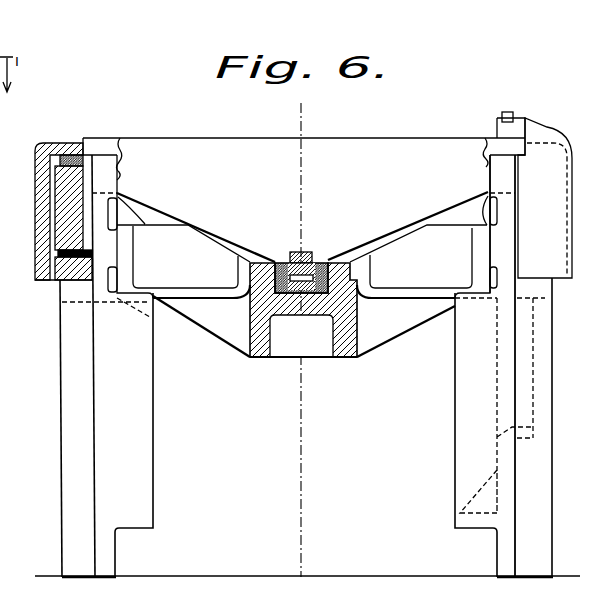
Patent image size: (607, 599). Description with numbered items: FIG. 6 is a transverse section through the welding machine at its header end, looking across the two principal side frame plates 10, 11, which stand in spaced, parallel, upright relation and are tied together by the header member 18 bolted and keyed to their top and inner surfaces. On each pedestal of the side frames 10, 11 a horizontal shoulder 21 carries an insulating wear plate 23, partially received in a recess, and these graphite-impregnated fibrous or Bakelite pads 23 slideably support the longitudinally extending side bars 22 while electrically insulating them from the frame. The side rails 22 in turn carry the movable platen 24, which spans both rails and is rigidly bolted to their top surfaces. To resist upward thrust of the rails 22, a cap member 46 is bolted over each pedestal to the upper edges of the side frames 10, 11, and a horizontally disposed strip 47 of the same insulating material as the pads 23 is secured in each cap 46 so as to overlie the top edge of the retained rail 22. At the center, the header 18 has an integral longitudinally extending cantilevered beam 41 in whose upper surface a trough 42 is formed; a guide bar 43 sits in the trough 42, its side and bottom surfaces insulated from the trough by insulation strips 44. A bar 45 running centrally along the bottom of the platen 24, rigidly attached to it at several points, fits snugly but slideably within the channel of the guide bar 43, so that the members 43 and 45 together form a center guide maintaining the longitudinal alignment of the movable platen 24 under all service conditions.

The side frame plate 10 is at (68, 460).
The side frame plate 11 is at (541, 470).
The header member 18 is at (390, 323).
The horizontal shoulder 21 is at (58, 281).
The side bar 22 is at (62, 220).
The insulating wear plate 23 is at (50, 272).
The movable platen 24 is at (365, 140).
The cantilevered beam 41 is at (343, 353).
The trough 42 is at (293, 313).
The guide bar 43 is at (267, 303).
The insulation strip 44 is at (355, 278).
The bar 45 is at (308, 252).
The cap member 46 is at (47, 143).
The horizontally disposed strip 47 is at (70, 158).